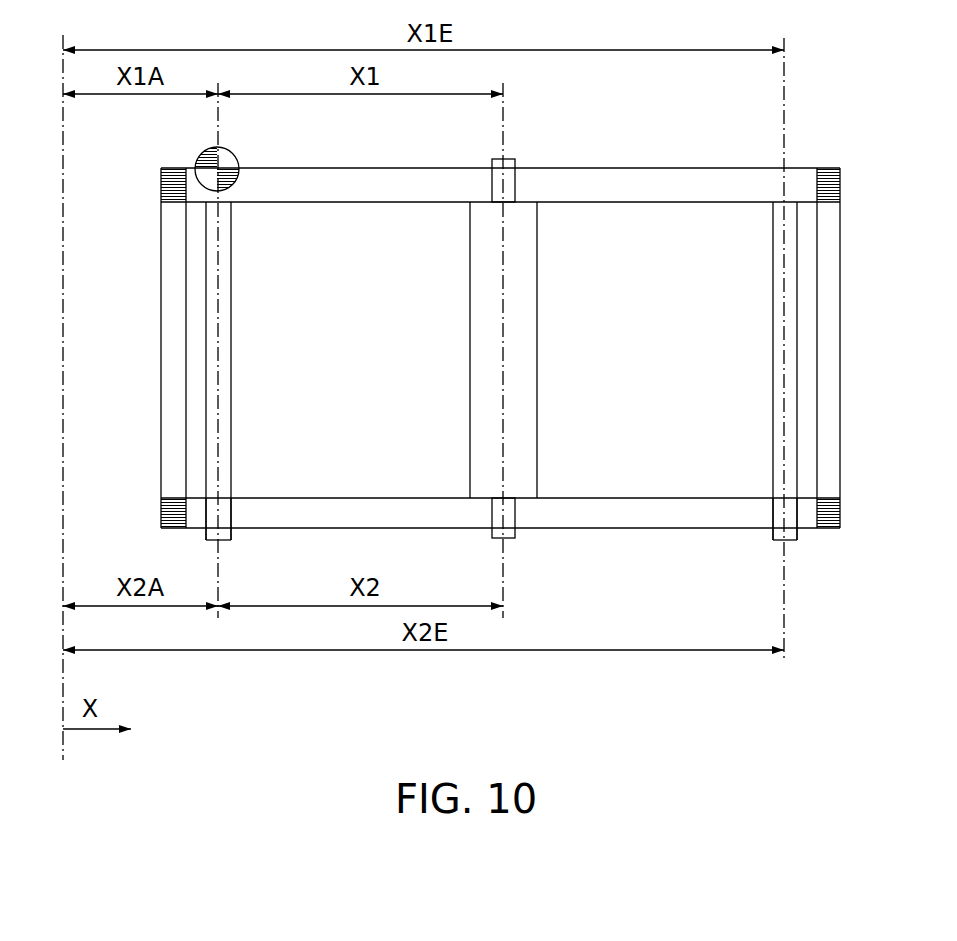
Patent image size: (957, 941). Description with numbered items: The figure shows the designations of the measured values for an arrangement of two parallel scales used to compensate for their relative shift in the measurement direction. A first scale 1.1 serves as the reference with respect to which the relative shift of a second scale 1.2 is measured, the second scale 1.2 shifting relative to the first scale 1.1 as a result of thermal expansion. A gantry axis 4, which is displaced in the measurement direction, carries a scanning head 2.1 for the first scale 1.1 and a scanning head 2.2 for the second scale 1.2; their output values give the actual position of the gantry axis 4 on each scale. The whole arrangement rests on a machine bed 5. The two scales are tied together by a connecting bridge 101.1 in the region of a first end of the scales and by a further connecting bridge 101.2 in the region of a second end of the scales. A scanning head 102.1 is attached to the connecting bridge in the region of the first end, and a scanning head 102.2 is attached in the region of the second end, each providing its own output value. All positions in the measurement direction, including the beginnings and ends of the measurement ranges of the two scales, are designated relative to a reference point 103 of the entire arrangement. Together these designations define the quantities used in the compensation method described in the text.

The first scale 1.1 is at (377, 185).
The second scale 1.2 is at (380, 513).
The scanning head 2.1 is at (505, 178).
The scanning head 2.2 is at (505, 517).
The gantry axis 4 is at (523, 330).
The machine bed 5 is at (745, 288).
The connecting bridge 101.1 is at (218, 340).
The connecting bridge 101.2 is at (785, 362).
The scanning head 102.1 is at (224, 506).
The scanning head 102.2 is at (788, 540).
The reference point 103 is at (240, 180).